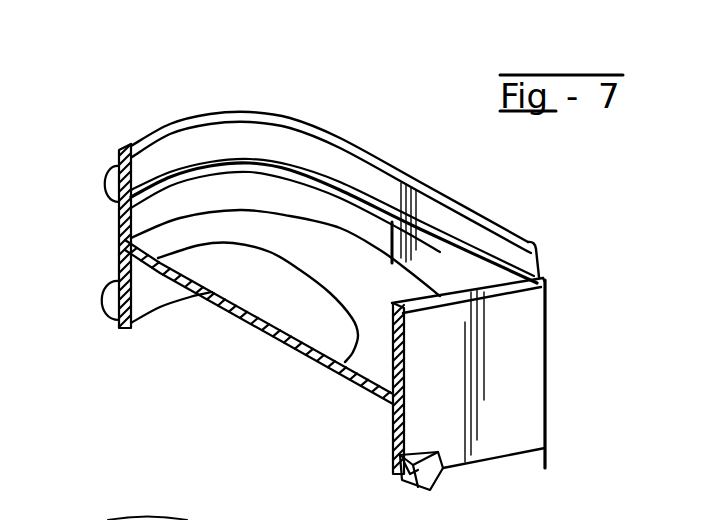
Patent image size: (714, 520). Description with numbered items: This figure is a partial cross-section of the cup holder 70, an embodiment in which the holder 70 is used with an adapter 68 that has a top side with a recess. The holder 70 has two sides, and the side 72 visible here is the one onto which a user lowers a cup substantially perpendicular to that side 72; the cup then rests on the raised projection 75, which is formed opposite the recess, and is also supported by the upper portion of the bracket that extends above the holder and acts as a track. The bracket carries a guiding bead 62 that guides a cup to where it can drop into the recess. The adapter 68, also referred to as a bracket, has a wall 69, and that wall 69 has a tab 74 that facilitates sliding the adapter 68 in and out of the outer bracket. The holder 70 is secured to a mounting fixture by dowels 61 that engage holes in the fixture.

The dowels 61 is at (104, 180).
The guiding bead 62 is at (535, 243).
The adapter 68 is at (573, 397).
The wall 69 is at (527, 438).
The holder 70 is at (564, 347).
The side 72 is at (388, 282).
The tab 74 is at (442, 468).
The raised projection 75 is at (282, 258).